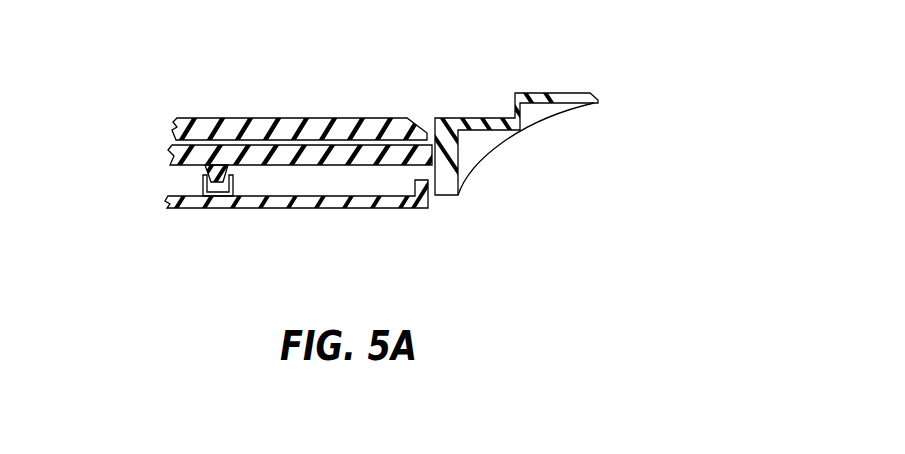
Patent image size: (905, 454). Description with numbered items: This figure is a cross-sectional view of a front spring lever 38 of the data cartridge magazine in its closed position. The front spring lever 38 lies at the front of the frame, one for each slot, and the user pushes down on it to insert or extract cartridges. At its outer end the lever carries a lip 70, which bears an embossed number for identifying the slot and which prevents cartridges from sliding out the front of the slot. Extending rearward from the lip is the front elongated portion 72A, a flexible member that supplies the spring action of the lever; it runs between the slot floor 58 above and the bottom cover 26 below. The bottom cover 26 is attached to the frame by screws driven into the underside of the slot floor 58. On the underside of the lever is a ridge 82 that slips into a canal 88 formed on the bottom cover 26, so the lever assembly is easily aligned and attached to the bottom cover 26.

The slot floor 58 is at (272, 117).
The front elongated portion 72A is at (173, 150).
The ridge 82 is at (208, 182).
The canal 88 is at (222, 192).
The bottom cover 26 is at (312, 209).
The lip 70 is at (573, 93).
The front spring lever 38 is at (640, 93).